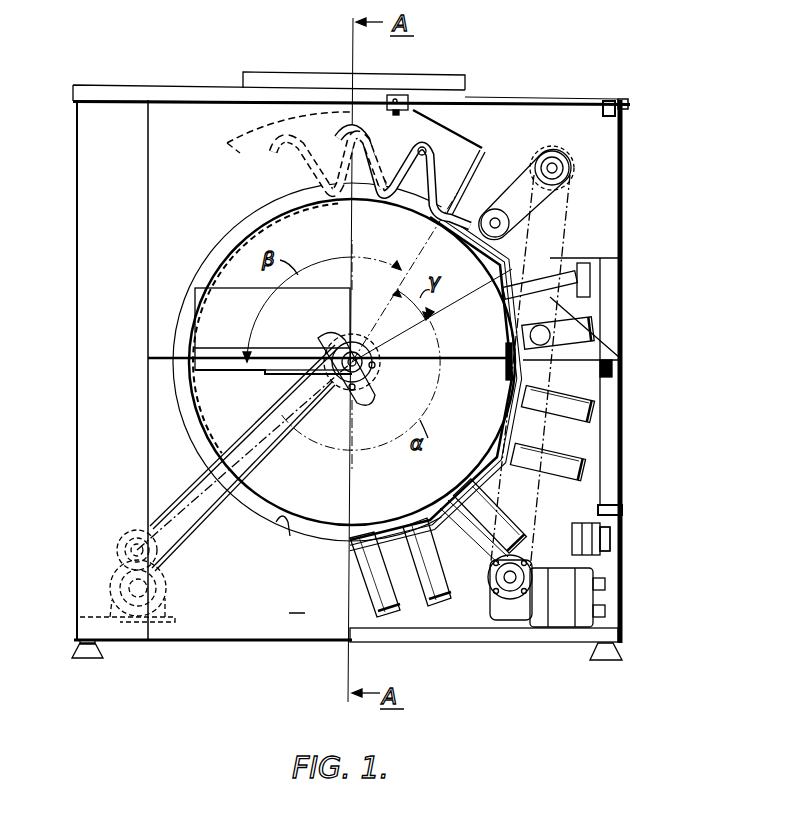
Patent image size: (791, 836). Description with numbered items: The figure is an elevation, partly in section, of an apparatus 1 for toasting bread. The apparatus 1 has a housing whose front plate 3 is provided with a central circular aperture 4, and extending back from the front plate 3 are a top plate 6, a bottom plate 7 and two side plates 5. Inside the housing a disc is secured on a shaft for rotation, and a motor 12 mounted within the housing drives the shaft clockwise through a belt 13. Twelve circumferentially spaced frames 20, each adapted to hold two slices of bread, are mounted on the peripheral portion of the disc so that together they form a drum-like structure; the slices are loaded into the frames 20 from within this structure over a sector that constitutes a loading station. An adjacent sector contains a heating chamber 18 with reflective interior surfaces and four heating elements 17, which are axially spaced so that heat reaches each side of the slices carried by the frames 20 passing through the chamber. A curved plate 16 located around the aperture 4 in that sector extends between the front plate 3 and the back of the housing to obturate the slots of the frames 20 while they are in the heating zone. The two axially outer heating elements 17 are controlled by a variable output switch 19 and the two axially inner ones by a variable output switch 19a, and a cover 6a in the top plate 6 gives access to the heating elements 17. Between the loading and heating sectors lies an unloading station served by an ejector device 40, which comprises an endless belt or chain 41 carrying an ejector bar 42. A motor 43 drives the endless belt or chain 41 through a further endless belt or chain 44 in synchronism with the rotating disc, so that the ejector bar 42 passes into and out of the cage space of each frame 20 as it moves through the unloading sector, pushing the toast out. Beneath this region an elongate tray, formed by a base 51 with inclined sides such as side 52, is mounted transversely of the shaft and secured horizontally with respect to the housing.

The apparatus 1 is at (596, 672).
The front plate 3 is at (297, 601).
The central circular aperture 4 is at (281, 527).
The side plates 5 is at (78, 505).
The top plate 6 is at (531, 99).
The cover 6a is at (450, 72).
The bottom plate 7 is at (412, 642).
The motor 12 is at (134, 600).
The belt 13 is at (178, 488).
The curved plate 16 is at (268, 234).
The heating elements 17 is at (374, 163).
The heating chamber 18 is at (240, 176).
The variable output switch 19 is at (616, 540).
The variable output switch 19a is at (605, 539).
The frames 20 is at (456, 606).
The ejector device 40 is at (578, 166).
The endless belt or chain 41 is at (556, 198).
The ejector bar 42 is at (505, 243).
The motor 43 is at (563, 615).
The further endless belt or chain 44 is at (562, 222).
The base 51 is at (478, 362).
The inclined side 52 is at (311, 333).